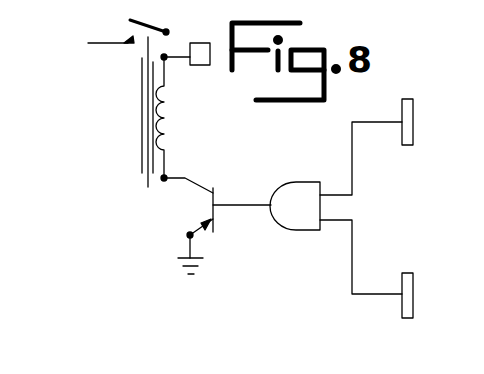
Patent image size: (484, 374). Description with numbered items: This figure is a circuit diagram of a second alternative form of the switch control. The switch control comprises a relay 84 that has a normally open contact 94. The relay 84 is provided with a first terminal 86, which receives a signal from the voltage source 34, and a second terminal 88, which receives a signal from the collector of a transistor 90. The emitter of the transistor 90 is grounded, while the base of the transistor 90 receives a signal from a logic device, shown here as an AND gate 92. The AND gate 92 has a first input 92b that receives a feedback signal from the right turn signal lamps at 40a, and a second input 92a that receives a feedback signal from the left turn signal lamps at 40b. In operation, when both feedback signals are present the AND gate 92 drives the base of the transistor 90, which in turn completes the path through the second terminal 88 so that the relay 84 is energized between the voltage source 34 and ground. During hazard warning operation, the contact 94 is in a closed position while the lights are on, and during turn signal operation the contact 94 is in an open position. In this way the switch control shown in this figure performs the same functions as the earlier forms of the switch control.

The voltage source 34 is at (200, 43).
The right turn signal lamps 40a is at (413, 130).
The left turn signal lamps 40b is at (413, 303).
The relay 84 is at (170, 120).
The first terminal 86 is at (165, 60).
The second terminal 88 is at (166, 176).
The transistor 90 is at (215, 194).
The AND gate 92 is at (293, 182).
The second input 92a is at (330, 196).
The first input 92b is at (330, 217).
The normally open contact 94 is at (131, 20).